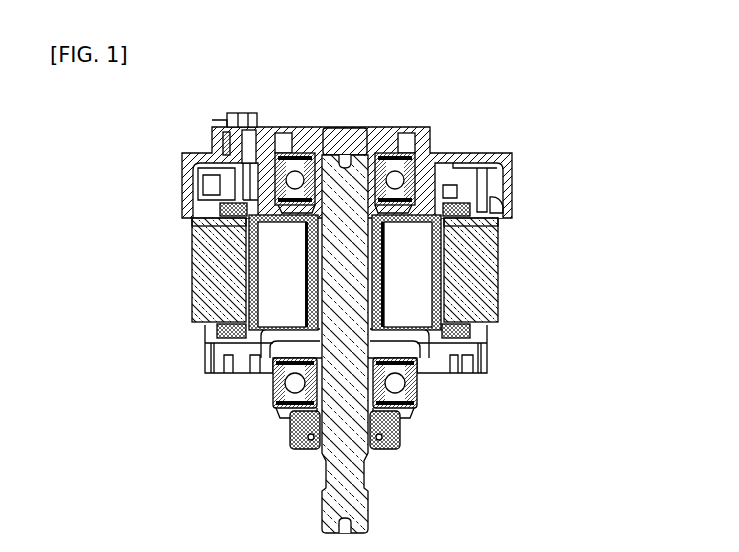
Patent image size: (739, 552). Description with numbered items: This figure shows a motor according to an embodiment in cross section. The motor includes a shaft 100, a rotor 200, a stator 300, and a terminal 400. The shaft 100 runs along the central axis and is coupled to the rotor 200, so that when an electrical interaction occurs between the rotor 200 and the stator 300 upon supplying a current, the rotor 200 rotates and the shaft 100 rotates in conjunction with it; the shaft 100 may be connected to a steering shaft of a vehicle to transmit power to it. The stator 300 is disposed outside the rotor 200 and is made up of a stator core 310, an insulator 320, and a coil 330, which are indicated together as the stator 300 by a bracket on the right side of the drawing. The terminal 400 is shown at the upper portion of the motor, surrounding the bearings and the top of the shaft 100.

The shaft 100 is at (377, 479).
The rotor 200 is at (407, 312).
The stator 300 is at (406, 266).
The stator core 310 is at (468, 266).
The insulator 320 is at (498, 226).
The coil 330 is at (511, 204).
The terminal 400 is at (194, 151).